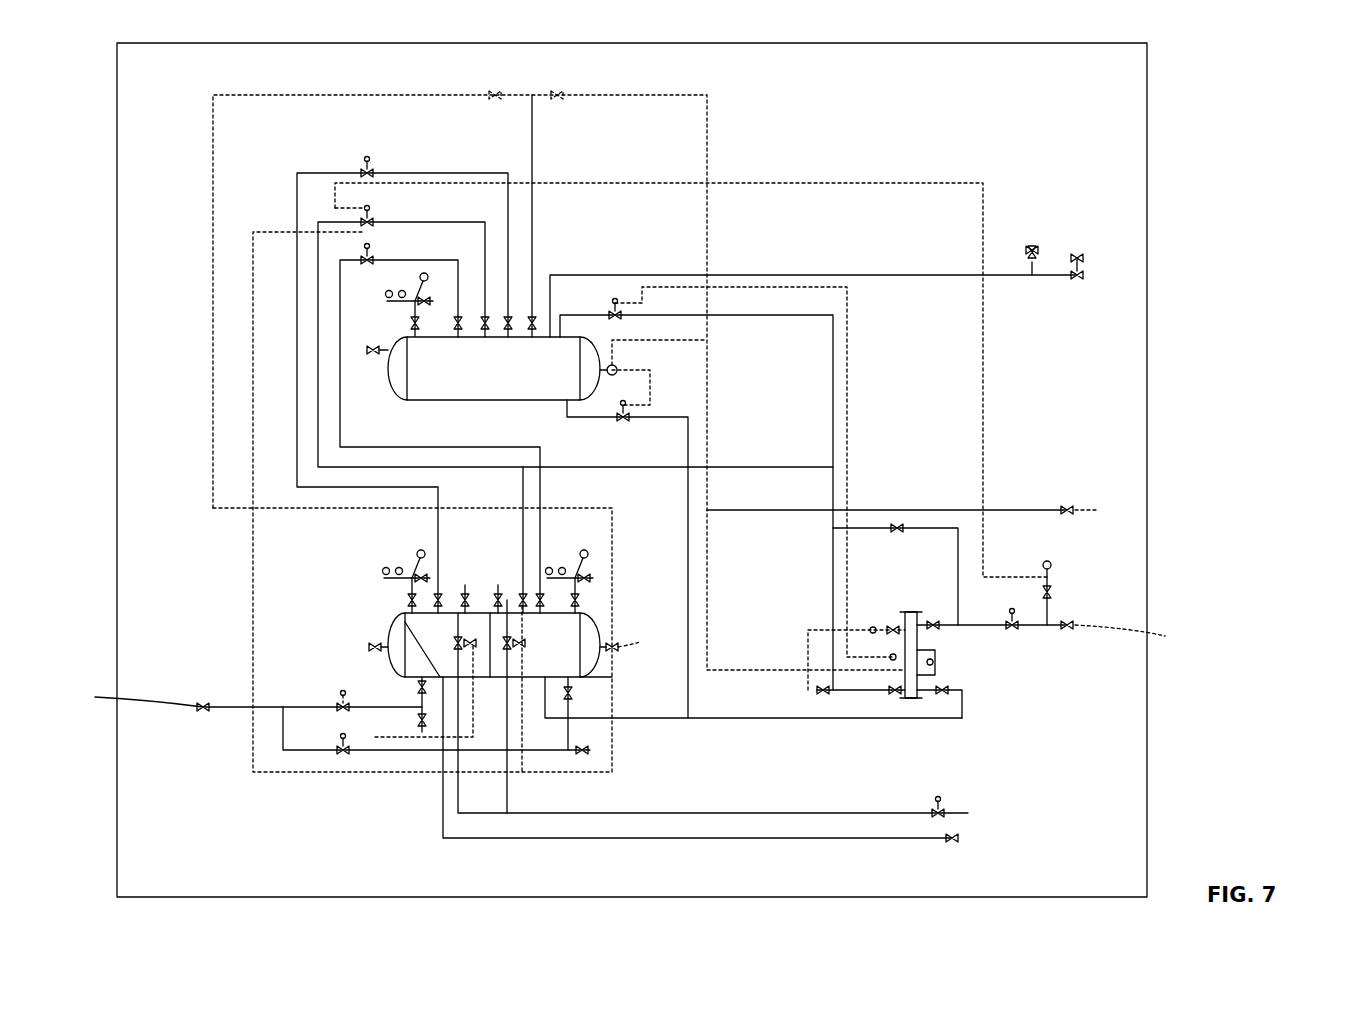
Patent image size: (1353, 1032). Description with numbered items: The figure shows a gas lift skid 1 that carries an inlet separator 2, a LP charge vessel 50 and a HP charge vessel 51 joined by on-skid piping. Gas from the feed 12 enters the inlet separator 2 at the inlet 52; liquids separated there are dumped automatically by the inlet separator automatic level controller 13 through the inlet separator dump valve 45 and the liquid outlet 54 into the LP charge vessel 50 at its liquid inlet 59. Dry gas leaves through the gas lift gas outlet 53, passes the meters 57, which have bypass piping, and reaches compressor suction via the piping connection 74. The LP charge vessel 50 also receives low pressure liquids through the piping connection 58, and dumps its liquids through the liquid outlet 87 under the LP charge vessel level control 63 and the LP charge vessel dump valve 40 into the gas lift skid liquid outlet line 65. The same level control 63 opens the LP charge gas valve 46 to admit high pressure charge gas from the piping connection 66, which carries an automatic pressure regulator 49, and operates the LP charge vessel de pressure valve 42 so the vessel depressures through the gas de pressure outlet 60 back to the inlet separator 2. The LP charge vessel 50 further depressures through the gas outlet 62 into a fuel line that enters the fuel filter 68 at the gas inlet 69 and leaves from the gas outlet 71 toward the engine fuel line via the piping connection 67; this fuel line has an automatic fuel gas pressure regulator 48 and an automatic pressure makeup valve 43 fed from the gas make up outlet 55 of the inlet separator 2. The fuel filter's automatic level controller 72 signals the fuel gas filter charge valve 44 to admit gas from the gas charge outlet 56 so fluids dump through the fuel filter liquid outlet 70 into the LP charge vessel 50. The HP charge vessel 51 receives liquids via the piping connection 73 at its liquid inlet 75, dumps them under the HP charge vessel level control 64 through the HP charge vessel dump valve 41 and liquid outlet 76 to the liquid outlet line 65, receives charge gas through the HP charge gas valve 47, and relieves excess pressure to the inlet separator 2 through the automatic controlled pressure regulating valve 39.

The gas lift skid 1 is at (1168, 758).
The inlet separator 2 is at (445, 407).
The feed 12 is at (365, 345).
The inlet separator automatic level controller 13 is at (617, 368).
The automatic controlled pressure regulating valve 39 is at (375, 165).
The LP charge vessel dump valve 40 is at (343, 758).
The HP charge vessel dump valve 41 is at (340, 693).
The LP charge vessel de pressure valve 42 is at (375, 253).
The automatic pressure makeup valve 43 is at (375, 216).
The fuel gas filter charge valve 44 is at (618, 298).
The inlet separator dump valve 45 is at (630, 403).
The LP charge gas valve 46 is at (523, 585).
The HP charge gas valve 47 is at (498, 590).
The automatic fuel gas pressure regulator 48 is at (1015, 630).
The automatic pressure regulator 49 is at (935, 797).
The LP charge vessel 50 is at (568, 665).
The HP charge vessel 51 is at (490, 690).
The inlet 52 is at (388, 348).
The gas lift gas outlet 53 is at (552, 272).
The liquid outlet 54 is at (565, 403).
The gas make up outlet 55 is at (487, 340).
The gas charge outlet to the fuel filter 56 is at (562, 312).
The meter 57 is at (1035, 245).
The on skid interconnected piping connection 58 is at (918, 508).
The liquid inlet 59 is at (537, 690).
The gas de pressure outlet 60 is at (545, 613).
The gas outlet 62 is at (527, 600).
The LP charge vessel level control 63 is at (635, 640).
The HP charge vessel level control 64 is at (370, 640).
The gas lift skid liquid outlet line 65 is at (241, 704).
The interconnected on skid piping connection 66 is at (968, 813).
The on skid interconnected piping connection 67 is at (1129, 634).
The fuel filter 68 is at (920, 640).
The gas inlet 69 is at (905, 698).
The fuel filter liquid outlet 70 is at (920, 690).
The gas outlet 71 is at (915, 612).
The automatic level controller 72 is at (888, 695).
The on skid interconnecting piping connection 73 is at (958, 838).
The on skid interconnected piping connection 74 is at (1085, 275).
The liquid inlet 75 is at (405, 622).
The liquid outlet 76 is at (400, 682).
The liquid outlet 87 is at (575, 683).